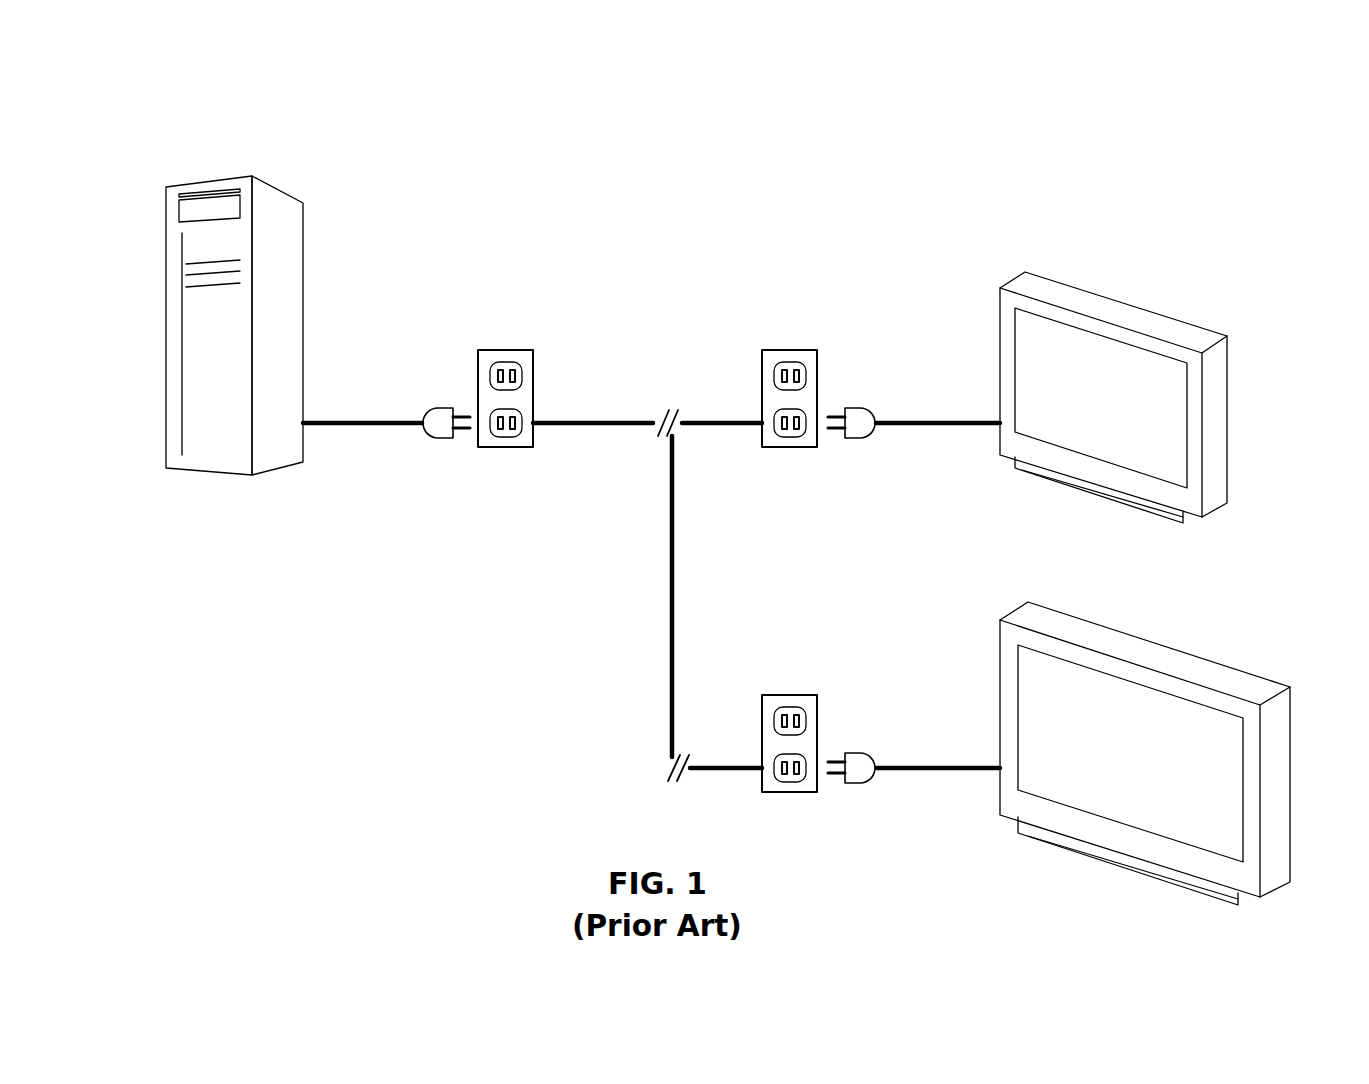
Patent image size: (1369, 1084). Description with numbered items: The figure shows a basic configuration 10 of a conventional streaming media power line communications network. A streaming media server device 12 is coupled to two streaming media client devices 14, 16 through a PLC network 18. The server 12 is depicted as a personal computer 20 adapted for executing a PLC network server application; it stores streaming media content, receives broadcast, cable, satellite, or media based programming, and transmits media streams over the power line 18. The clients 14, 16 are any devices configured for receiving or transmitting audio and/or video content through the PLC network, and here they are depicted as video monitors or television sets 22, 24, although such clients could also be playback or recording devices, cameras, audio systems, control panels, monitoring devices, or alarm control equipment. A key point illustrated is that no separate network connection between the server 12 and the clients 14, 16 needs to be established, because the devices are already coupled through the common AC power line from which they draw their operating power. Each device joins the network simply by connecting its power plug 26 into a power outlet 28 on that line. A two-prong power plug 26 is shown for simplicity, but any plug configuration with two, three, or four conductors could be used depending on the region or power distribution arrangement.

The basic configuration 10 is at (116, 98).
The streaming media server device 12 is at (288, 310).
The streaming media client device 14 is at (1151, 369).
The streaming media client device 16 is at (1183, 736).
The PLC network 18 is at (611, 392).
The personal computer 20 is at (303, 288).
The television set 22 is at (1228, 410).
The television set 24 is at (1290, 763).
The power plug 26 is at (437, 408).
The power outlet 28 is at (521, 350).